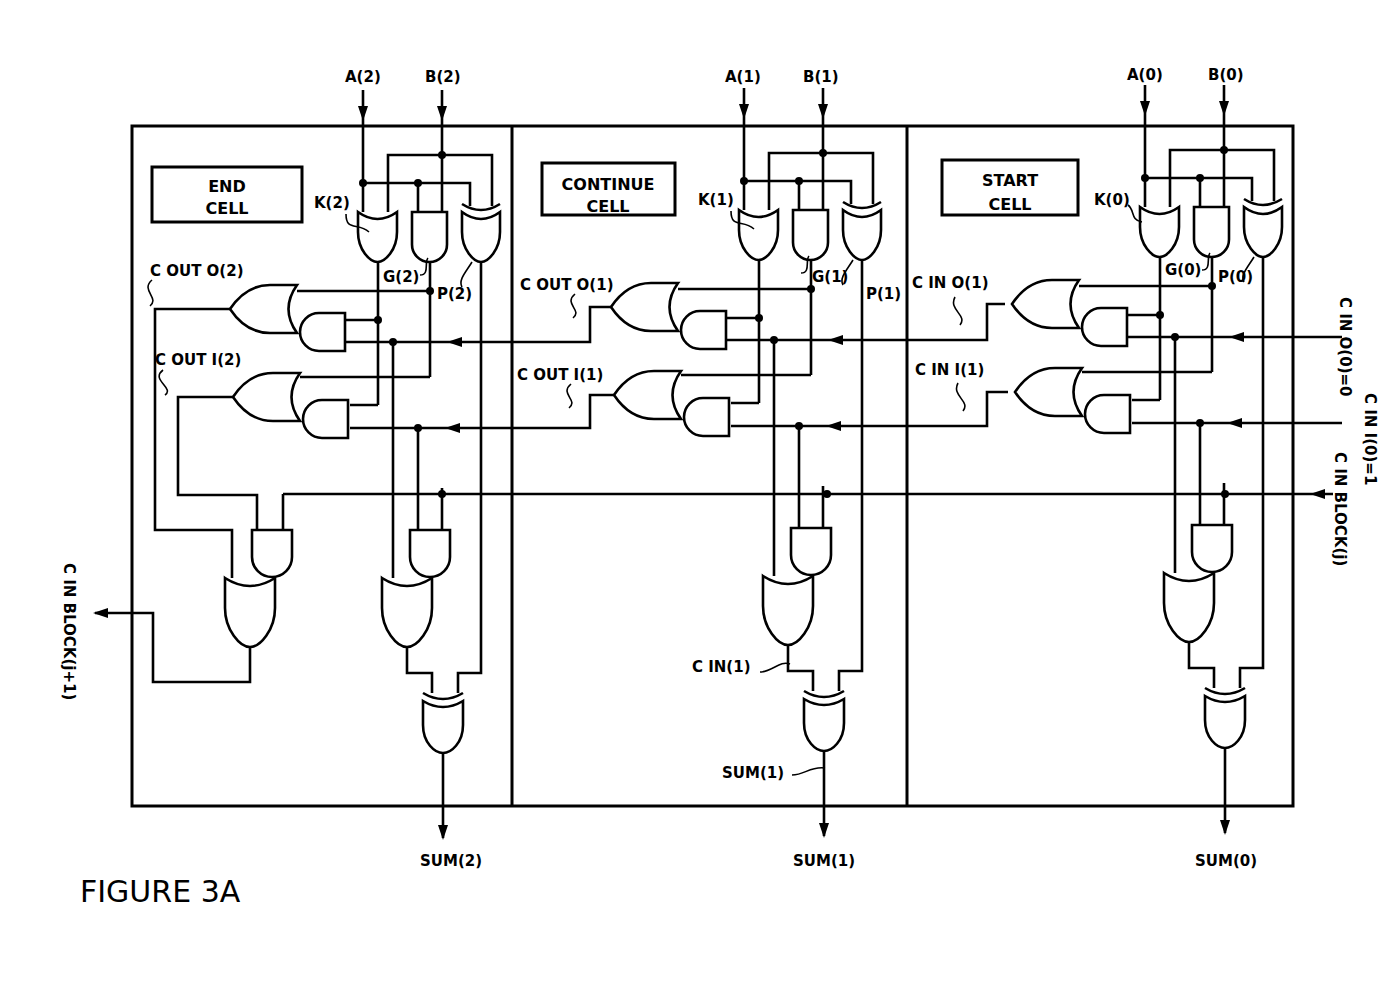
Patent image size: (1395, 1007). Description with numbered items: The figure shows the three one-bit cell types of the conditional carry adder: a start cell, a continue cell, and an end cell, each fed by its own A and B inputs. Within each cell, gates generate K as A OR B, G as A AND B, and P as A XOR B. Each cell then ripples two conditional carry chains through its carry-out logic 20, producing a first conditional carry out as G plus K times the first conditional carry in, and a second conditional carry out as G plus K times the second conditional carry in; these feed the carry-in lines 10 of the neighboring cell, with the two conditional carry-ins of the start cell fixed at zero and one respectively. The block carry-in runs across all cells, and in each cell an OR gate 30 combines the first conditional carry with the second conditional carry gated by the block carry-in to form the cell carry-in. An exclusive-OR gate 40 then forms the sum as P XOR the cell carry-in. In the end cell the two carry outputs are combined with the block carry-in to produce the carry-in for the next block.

The carry-in lines 10 is at (833, 383).
The carry-out logic 20 is at (711, 359).
The OR gate 30 is at (763, 633).
The exclusive-OR gate 40 is at (847, 764).